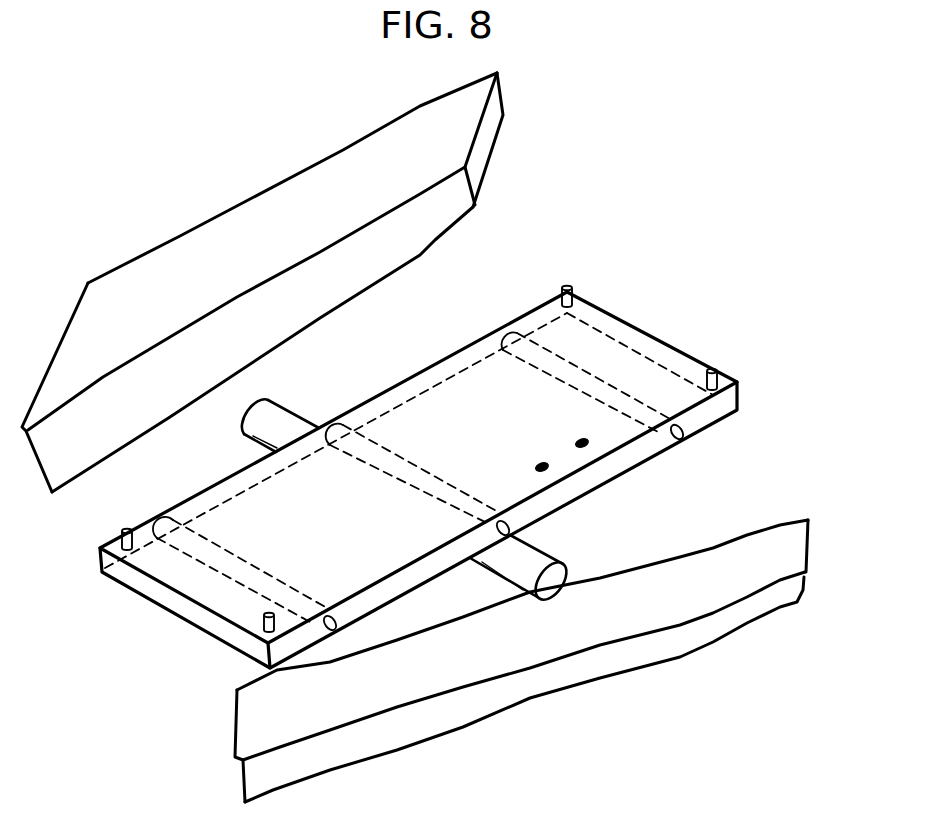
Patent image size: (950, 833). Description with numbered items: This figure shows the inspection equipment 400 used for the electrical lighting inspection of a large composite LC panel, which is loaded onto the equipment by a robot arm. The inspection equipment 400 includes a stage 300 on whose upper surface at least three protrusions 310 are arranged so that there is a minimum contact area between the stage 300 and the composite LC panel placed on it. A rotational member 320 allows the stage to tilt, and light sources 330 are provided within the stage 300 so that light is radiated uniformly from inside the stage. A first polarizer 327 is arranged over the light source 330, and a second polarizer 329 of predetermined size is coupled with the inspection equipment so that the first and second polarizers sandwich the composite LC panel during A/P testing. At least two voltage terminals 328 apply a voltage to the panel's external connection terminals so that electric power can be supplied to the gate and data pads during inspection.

The stage 300 is at (188, 607).
The protrusions 310 is at (717, 377).
The rotational member 320 is at (555, 580).
The first polarizer 327 is at (505, 113).
The voltage terminals 328 is at (582, 449).
The second polarizer 329 is at (782, 558).
The light sources 330 is at (688, 438).
The inspection equipment 400 is at (487, 317).